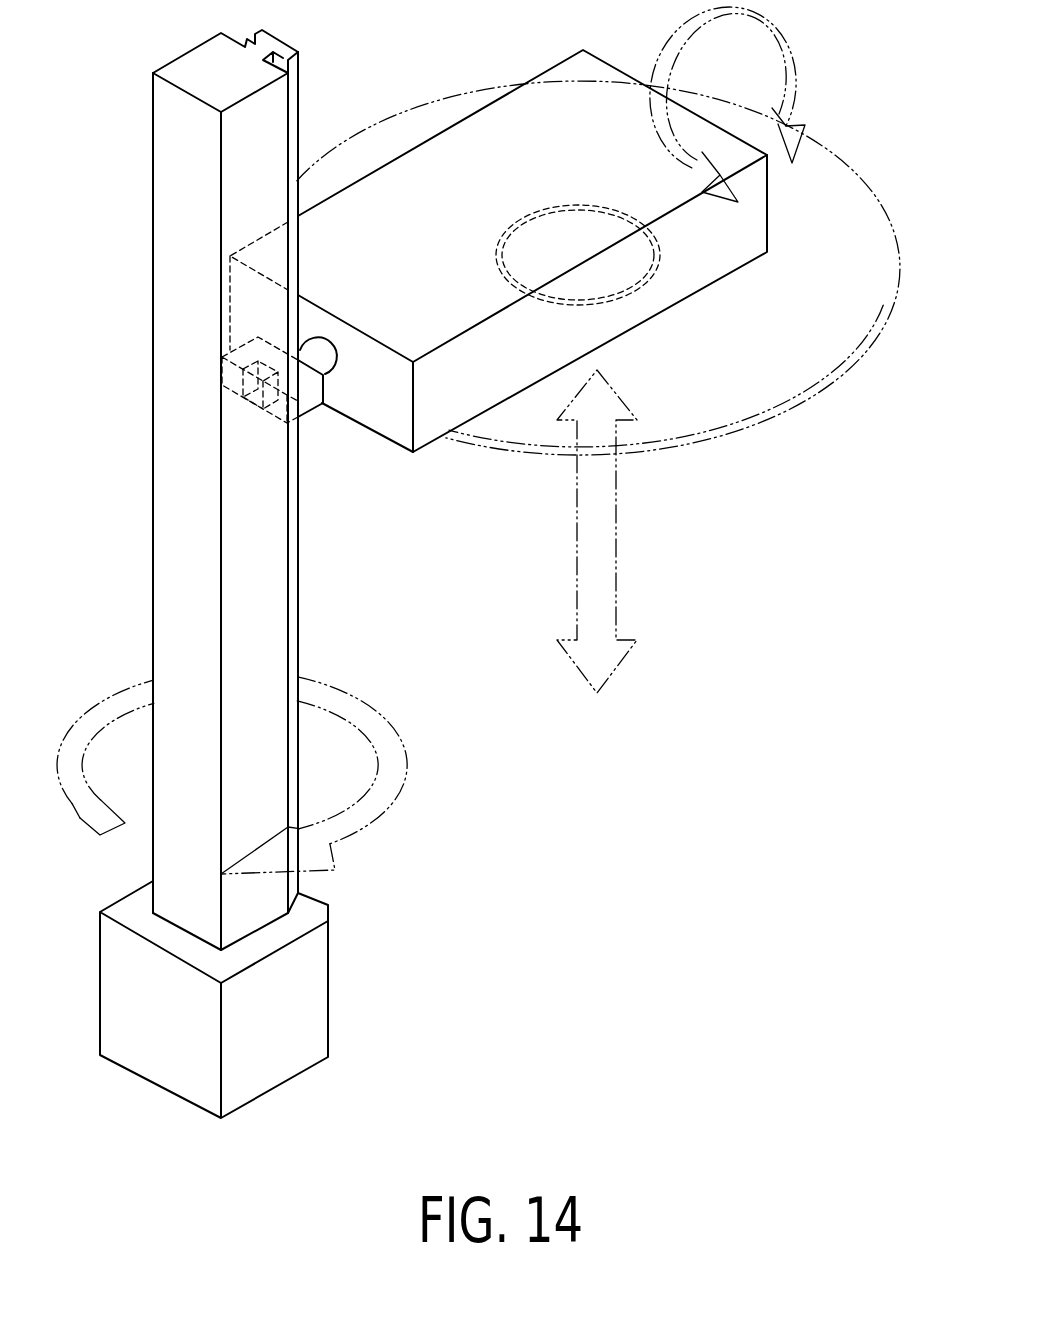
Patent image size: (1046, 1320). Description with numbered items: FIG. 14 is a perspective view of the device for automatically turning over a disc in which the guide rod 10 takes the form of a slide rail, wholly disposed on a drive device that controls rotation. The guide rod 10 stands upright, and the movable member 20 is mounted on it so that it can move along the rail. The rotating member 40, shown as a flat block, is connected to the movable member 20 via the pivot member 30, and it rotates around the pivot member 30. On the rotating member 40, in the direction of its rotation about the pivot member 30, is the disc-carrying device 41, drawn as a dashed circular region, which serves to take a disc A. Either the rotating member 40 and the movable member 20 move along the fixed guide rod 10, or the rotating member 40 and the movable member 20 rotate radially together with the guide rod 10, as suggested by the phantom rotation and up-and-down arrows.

The guide rod 10 is at (297, 622).
The movable member 20 is at (315, 408).
The pivot member 30 is at (322, 342).
The rotating member 40 is at (514, 251).
The disc-carrying device 41 is at (615, 283).
The disc A is at (857, 177).